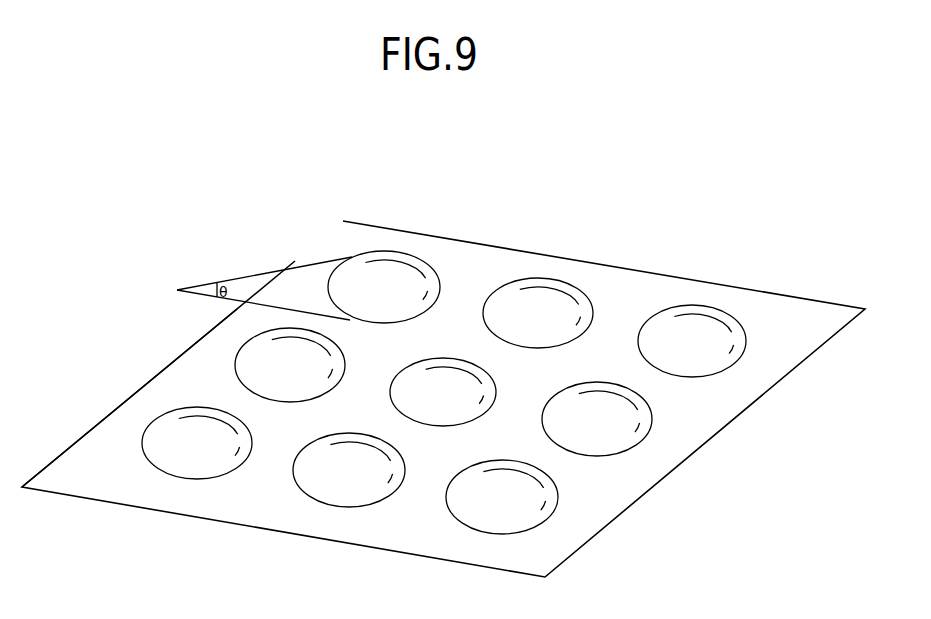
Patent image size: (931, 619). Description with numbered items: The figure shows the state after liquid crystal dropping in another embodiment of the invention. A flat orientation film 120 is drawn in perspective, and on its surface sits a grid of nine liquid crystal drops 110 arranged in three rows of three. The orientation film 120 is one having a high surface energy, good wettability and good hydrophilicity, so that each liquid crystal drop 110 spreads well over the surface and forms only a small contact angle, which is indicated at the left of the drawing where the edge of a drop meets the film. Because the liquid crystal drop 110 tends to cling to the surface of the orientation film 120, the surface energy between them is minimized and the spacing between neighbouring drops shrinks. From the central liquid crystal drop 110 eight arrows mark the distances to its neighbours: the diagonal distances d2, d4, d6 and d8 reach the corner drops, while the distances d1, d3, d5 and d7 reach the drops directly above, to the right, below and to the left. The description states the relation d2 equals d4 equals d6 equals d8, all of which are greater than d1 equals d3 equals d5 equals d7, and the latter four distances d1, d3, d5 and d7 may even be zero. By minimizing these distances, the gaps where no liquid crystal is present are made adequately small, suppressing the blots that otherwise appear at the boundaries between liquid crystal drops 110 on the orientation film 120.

The liquid crystal drop 110 is at (710, 333).
The orientation film 120 is at (692, 453).
The distance between adjacent liquid crystal drops d1 is at (506, 345).
The distance between adjacent liquid crystal drops d2 is at (499, 384).
The distance between adjacent liquid crystal drops d3 is at (544, 412).
The distance between adjacent liquid crystal drops d4 is at (462, 427).
The distance between adjacent liquid crystal drops d5 is at (410, 425).
The distance between adjacent liquid crystal drops d6 is at (389, 408).
The distance between adjacent liquid crystal drops d7 is at (388, 387).
The distance between adjacent liquid crystal drops d8 is at (424, 358).